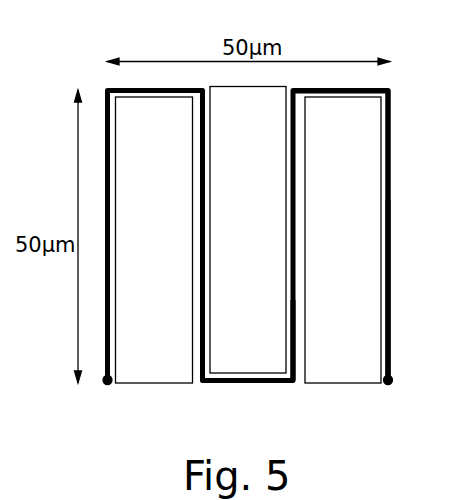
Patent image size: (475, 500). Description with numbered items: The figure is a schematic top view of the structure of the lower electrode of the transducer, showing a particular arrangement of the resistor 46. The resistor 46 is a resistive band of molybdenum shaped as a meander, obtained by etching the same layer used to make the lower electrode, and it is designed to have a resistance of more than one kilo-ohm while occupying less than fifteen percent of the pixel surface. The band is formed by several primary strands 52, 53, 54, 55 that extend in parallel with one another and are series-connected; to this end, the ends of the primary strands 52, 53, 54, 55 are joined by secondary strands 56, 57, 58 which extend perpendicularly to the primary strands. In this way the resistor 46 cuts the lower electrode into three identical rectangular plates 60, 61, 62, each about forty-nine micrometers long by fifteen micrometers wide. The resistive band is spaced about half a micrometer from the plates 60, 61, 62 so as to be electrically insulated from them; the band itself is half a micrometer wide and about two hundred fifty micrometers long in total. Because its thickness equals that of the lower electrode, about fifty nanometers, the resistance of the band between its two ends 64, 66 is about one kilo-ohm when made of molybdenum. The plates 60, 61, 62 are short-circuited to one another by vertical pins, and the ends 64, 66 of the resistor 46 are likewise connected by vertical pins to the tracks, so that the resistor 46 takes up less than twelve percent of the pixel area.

The resistor 46 is at (103, 89).
The secondary strand 58 is at (360, 88).
The secondary strand 56 is at (152, 89).
The rectangular plate 60 is at (147, 368).
The rectangular plate 62 is at (345, 363).
The rectangular plate 61 is at (273, 100).
The primary strand 53 is at (199, 360).
The primary strand 54 is at (297, 354).
The secondary strand 57 is at (232, 383).
The primary strand 52 is at (105, 315).
The primary strand 55 is at (391, 321).
The end of the resistor 64 is at (103, 385).
The end of the resistor 66 is at (393, 383).